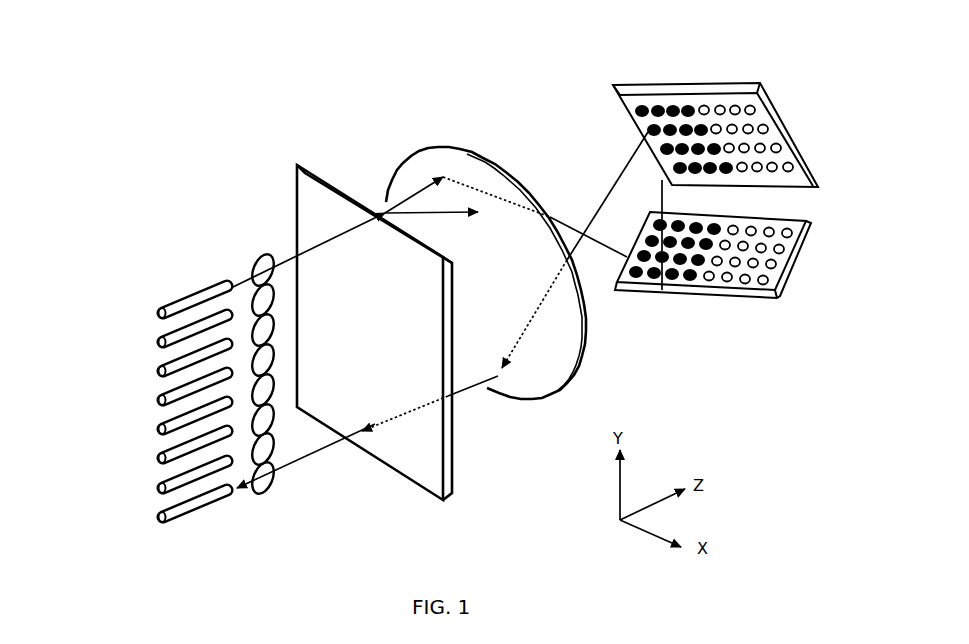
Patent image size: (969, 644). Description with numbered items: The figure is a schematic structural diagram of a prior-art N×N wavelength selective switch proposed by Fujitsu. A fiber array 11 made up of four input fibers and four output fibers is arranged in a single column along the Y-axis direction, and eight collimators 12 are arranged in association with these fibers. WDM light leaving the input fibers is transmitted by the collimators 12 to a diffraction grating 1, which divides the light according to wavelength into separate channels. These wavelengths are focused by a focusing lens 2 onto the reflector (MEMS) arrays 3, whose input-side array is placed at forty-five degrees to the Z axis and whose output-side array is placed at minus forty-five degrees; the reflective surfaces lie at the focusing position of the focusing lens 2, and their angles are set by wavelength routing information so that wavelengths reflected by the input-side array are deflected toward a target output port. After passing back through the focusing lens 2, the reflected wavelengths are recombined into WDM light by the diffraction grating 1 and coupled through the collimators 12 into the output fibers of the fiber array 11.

The diffraction grating 1 is at (298, 163).
The focusing lens 2 is at (450, 150).
The reflector (MEMS) array 3 is at (642, 93).
The fiber array 11 is at (143, 403).
The collimator 12 is at (260, 258).